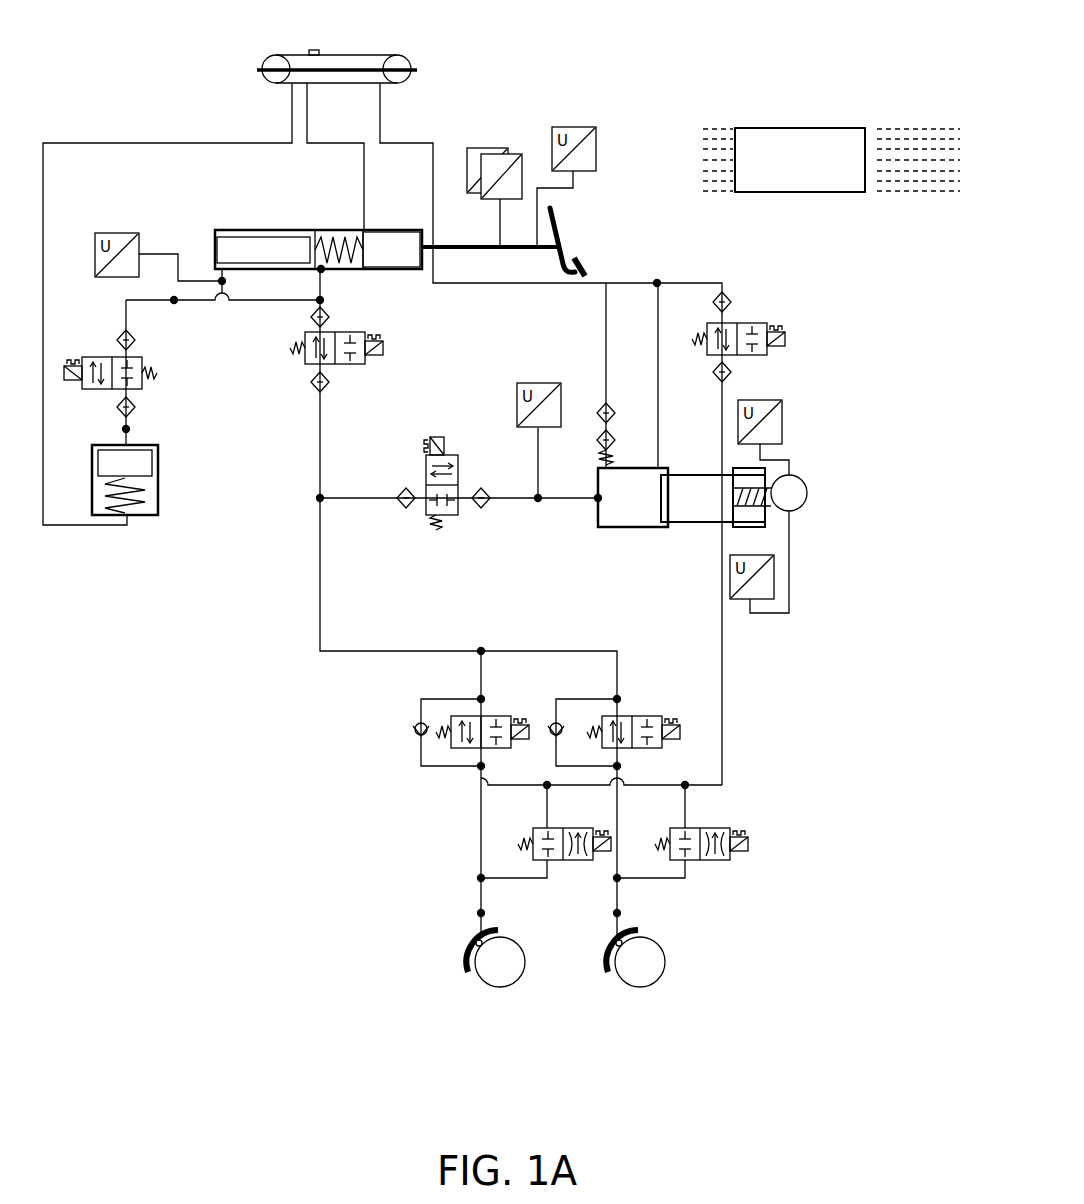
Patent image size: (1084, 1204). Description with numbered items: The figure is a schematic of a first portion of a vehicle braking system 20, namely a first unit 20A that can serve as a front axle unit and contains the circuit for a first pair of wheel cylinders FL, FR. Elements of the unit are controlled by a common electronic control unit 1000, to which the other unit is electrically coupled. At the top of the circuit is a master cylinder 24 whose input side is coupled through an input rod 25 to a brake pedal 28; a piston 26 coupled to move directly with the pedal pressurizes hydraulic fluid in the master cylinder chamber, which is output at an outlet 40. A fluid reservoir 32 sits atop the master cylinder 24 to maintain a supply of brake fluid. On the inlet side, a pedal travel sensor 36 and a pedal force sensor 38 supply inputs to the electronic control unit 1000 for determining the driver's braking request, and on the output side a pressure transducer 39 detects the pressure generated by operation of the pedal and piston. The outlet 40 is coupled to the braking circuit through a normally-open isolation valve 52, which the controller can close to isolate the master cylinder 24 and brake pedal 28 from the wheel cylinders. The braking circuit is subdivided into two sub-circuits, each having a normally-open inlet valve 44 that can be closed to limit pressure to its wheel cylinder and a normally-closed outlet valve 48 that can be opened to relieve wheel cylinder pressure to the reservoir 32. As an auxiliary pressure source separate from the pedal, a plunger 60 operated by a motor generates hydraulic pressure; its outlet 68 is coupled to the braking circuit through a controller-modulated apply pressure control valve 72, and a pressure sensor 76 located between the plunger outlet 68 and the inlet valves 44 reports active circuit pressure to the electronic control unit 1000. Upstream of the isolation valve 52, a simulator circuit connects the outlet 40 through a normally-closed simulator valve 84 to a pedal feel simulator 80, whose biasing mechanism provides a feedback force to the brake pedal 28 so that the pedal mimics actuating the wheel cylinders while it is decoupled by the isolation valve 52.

The braking system 20 is at (501, 500).
The first unit 20A is at (775, 320).
The master cylinder 24 is at (318, 232).
The input rod 25 is at (490, 265).
The piston 26 is at (396, 232).
The brake pedal 28 is at (585, 242).
The fluid reservoir 32 is at (345, 53).
The pedal travel sensor 36 is at (480, 196).
The pedal force sensor 38 is at (584, 174).
The pressure transducer 39 is at (141, 228).
The outlet 40 is at (346, 285).
The inlet valve 44 is at (547, 719).
The outlet valve 48 is at (614, 854).
The isolation valve 52 is at (346, 367).
The plunger 60 is at (734, 460).
The outlet 68 is at (608, 523).
The apply pressure control valve 72 is at (463, 497).
The pressure sensor 76 is at (511, 386).
The pedal feel simulator 80 is at (157, 480).
The simulator valve 84 is at (122, 356).
The electronic control unit 1000 is at (831, 144).